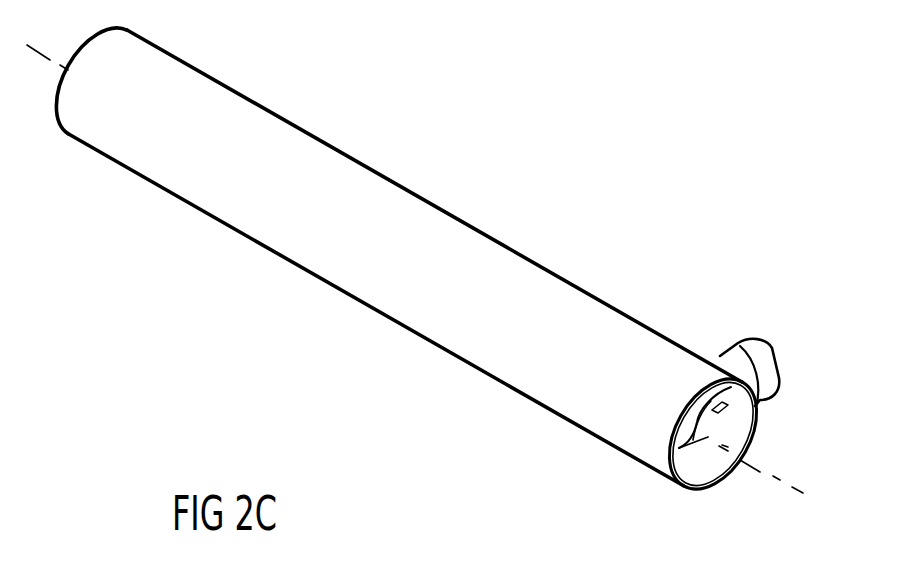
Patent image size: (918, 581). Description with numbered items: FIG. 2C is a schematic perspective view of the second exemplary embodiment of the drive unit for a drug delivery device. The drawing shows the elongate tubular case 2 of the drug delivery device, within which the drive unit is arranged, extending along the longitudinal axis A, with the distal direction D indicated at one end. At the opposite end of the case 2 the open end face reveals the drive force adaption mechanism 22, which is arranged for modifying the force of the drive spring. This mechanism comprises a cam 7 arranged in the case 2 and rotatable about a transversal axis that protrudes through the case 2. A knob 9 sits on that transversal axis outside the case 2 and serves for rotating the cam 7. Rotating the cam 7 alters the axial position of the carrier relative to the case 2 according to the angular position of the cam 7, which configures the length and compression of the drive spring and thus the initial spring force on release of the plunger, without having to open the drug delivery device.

The case 2 is at (222, 110).
The cam 7 is at (683, 440).
The knob 9 is at (752, 356).
The drive force adaption mechanism 22 is at (701, 452).
The distal direction D is at (47, 45).
The longitudinal axis A is at (801, 490).